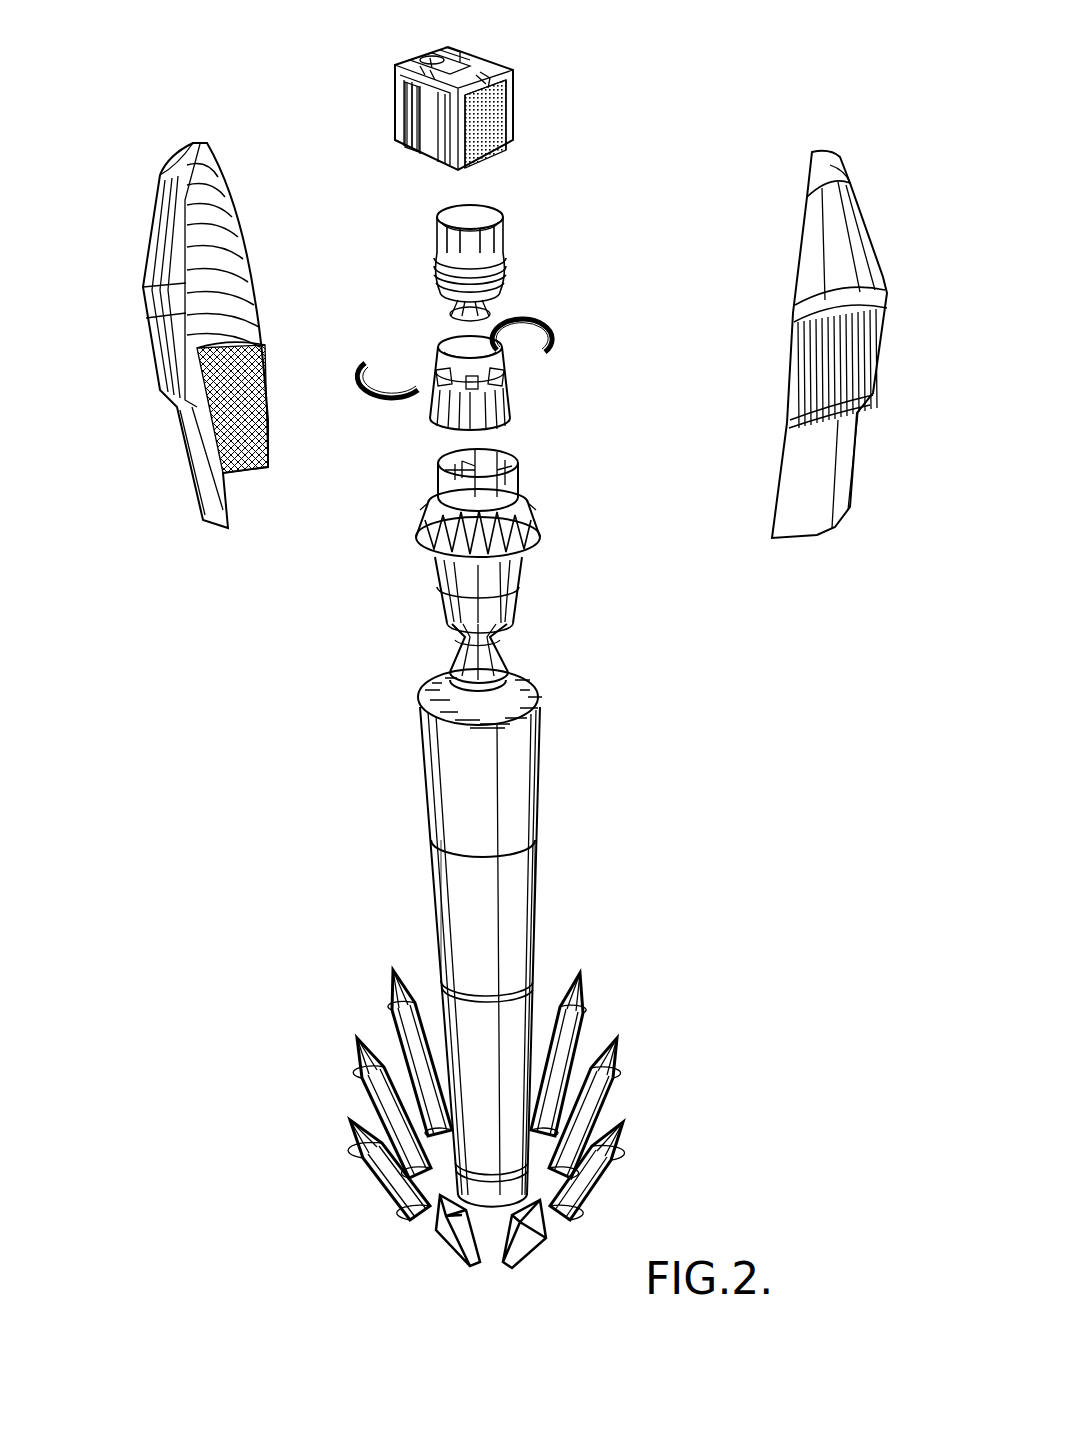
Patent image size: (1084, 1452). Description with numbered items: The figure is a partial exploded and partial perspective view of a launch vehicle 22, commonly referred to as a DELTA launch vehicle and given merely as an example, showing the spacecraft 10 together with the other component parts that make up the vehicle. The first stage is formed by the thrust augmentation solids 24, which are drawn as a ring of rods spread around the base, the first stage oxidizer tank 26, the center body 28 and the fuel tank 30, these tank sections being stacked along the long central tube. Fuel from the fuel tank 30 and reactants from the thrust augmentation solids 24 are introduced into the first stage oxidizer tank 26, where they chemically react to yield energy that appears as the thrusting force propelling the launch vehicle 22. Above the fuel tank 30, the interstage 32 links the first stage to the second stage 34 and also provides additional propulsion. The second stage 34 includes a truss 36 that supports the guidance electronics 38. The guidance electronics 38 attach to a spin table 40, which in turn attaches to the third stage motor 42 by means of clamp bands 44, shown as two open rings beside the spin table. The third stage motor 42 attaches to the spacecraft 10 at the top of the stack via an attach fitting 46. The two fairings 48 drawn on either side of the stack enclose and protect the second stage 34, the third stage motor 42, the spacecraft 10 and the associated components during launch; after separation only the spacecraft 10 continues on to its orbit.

The spacecraft 10 is at (512, 86).
The launch vehicle 22 is at (178, 72).
The thrust augmentation solids 24 is at (622, 1050).
The first stage oxidizer tank 26 is at (516, 1042).
The center body 28 is at (530, 992).
The fuel tank 30 is at (512, 910).
The interstage 32 is at (512, 797).
The second stage 34 is at (450, 657).
The truss 36 is at (417, 525).
The guidance electronics 38 is at (502, 498).
The spin table 40 is at (500, 393).
The third stage motor 42 is at (508, 276).
The clamp bands 44 is at (557, 324).
The attach fitting 46 is at (502, 233).
The fairings 48 is at (153, 228).